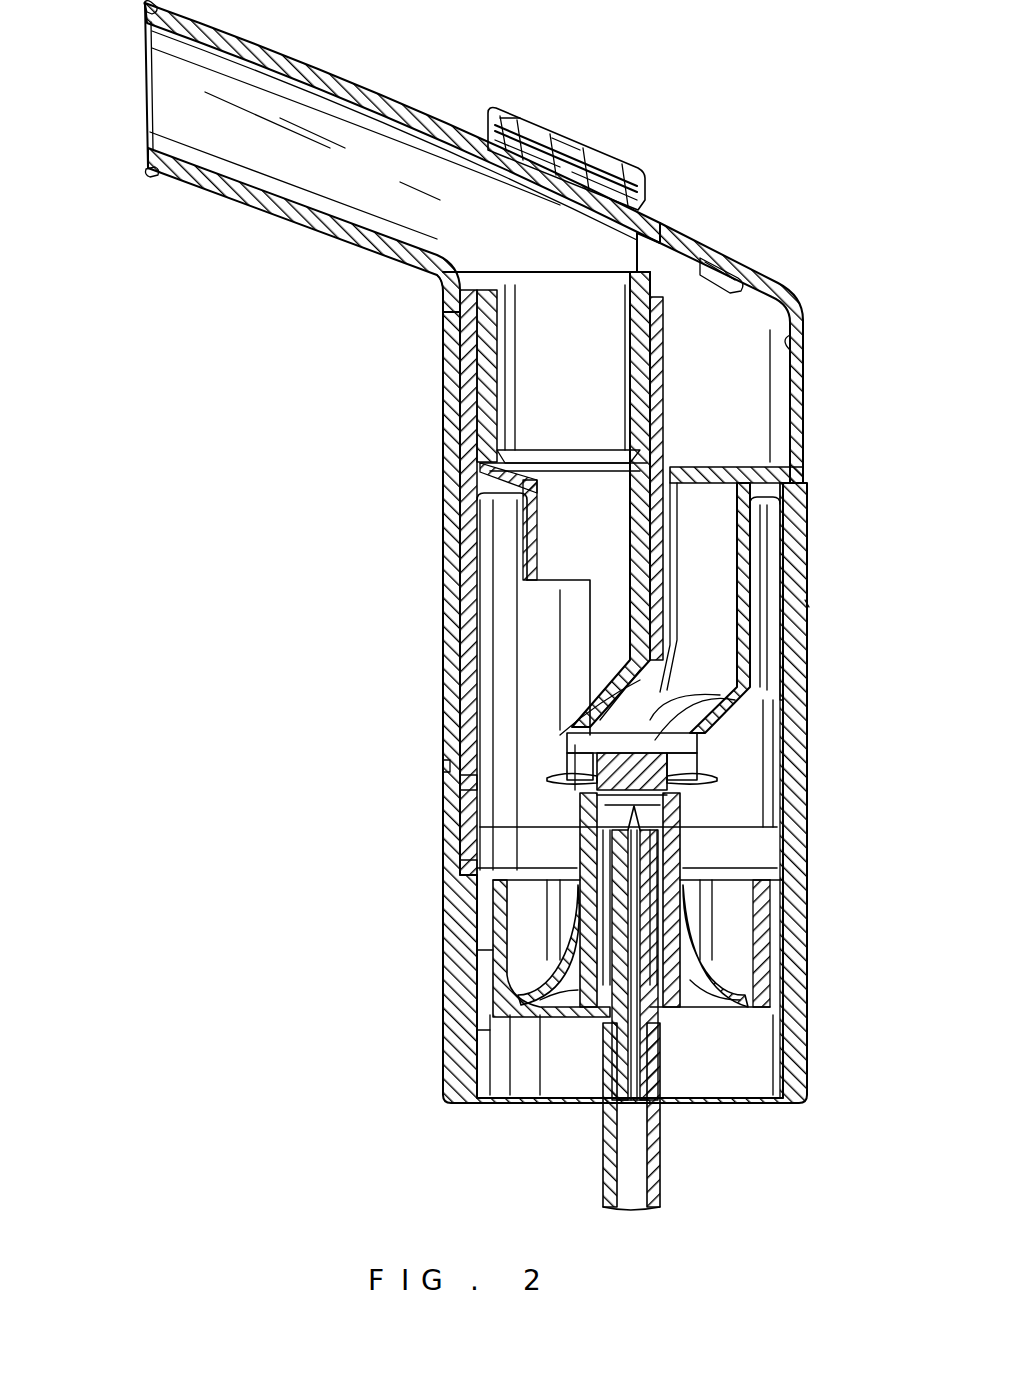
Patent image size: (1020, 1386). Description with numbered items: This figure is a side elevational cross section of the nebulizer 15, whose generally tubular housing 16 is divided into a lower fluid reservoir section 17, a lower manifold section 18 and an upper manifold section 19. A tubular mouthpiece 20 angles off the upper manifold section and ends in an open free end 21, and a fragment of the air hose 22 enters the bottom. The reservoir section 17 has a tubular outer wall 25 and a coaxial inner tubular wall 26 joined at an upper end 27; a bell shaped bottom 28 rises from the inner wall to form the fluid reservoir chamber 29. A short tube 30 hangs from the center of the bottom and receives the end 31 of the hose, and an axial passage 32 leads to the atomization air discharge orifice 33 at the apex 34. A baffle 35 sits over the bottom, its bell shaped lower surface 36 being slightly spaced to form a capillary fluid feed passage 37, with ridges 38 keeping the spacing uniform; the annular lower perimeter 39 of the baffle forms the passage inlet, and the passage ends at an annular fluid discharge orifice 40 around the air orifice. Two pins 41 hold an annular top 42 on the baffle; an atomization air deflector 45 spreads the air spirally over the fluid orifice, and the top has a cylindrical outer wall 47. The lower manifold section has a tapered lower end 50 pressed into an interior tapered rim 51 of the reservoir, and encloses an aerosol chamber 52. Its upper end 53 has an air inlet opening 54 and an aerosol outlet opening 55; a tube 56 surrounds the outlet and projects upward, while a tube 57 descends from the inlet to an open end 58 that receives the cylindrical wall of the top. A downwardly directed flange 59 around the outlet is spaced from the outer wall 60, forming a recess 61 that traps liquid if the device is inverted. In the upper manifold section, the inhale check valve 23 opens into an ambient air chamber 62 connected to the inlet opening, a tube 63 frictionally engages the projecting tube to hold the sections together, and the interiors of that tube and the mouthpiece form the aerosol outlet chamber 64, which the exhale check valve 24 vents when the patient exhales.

The nebulizer 15 is at (760, 147).
The housing 16 is at (440, 569).
The lower fluid reservoir section 17 is at (815, 990).
The lower manifold section 18 is at (812, 600).
The upper manifold section 19 is at (806, 375).
The mouthpiece 20 is at (245, 202).
The open free end 21 is at (140, 100).
The air hose 22 is at (662, 1170).
The check valve 23 is at (742, 292).
The check valve 24 is at (596, 175).
The outer wall 25 is at (450, 1033).
The inner tubular wall 26 is at (455, 950).
The upper end 27 is at (452, 865).
The bell shaped bottom 28 is at (530, 1020).
The fluid reservoir chamber 29 is at (775, 955).
The tube 30 is at (600, 1025).
The end 31 is at (663, 1055).
The passage 32 is at (630, 1090).
The atomization air discharge orifice 33 is at (690, 795).
The apex 34 is at (665, 815).
The baffle 35 is at (685, 895).
The bell shaped lower surface 36 is at (680, 985).
The capillary fluid feed passage 37 is at (690, 928).
The ridges 38 is at (680, 980).
The annular lower perimeter 39 is at (490, 985).
The annular fluid discharge orifice 40 is at (590, 805).
The pins 41 is at (590, 735).
The annular top 42 is at (628, 700).
The atomization air deflector 45 is at (575, 785).
The cylindrical outer wall 47 is at (700, 750).
The tapered lower end 50 is at (446, 780).
The interior tapered rim 51 is at (470, 776).
The aerosol chamber 52 is at (490, 655).
The upper end 53 is at (748, 466).
The air inlet opening 54 is at (710, 466).
The aerosol outlet opening 55 is at (565, 480).
The tube 56 is at (660, 355).
The tube 57 is at (755, 565).
The open end 58 is at (570, 755).
The flange 59 is at (540, 565).
The outer wall 60 is at (478, 636).
The recess 61 is at (490, 538).
The ambient air chamber 62 is at (800, 322).
The tube 63 is at (662, 380).
The aerosol outlet chamber 64 is at (437, 250).